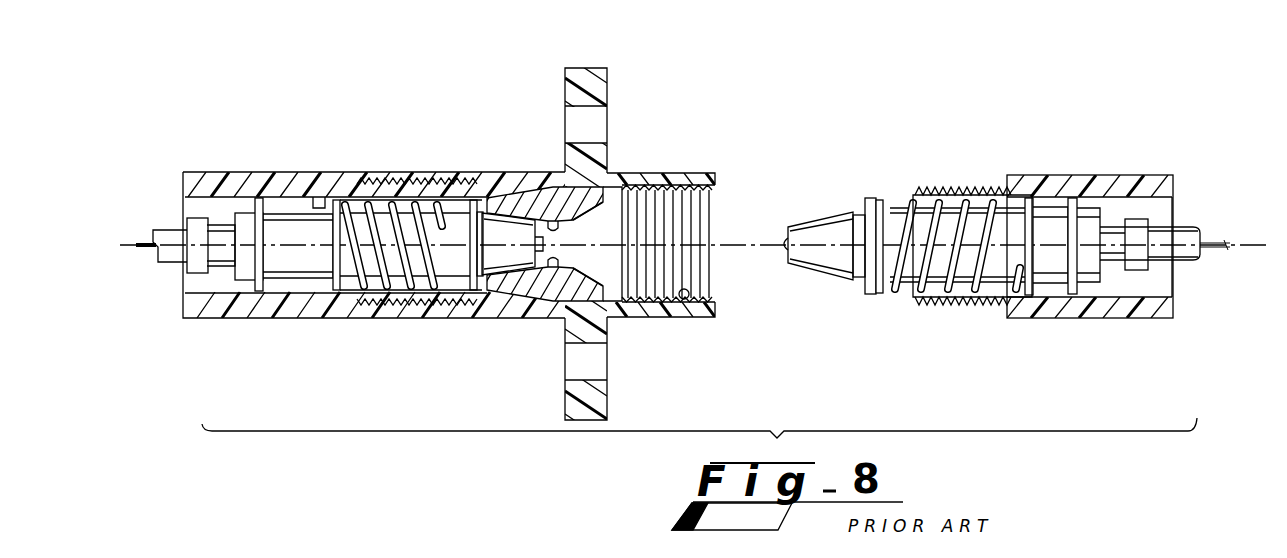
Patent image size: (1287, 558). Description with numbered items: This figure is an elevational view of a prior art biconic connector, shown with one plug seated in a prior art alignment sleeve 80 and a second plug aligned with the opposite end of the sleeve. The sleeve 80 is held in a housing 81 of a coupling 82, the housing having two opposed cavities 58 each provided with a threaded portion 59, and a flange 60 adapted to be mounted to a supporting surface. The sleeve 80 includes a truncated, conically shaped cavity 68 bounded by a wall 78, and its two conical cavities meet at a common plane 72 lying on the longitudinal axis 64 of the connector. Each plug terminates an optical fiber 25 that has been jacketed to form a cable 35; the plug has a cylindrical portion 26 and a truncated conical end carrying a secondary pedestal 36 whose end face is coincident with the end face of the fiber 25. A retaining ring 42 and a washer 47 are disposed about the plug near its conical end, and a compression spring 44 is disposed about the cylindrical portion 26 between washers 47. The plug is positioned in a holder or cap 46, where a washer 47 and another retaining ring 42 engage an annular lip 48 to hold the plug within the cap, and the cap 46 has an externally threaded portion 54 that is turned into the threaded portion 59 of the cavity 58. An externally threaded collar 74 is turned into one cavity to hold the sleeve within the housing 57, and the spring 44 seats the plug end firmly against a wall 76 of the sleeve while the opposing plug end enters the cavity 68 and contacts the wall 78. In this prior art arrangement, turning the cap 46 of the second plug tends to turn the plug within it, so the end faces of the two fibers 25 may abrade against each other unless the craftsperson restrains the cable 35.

The optical fiber 25 is at (140, 255).
The cylindrical portion 26 is at (345, 252).
The cable 35 is at (170, 229).
The secondary pedestal 36 is at (785, 232).
The retaining ring 42 is at (254, 284).
The compression spring 44 is at (907, 294).
The cap 46 is at (197, 172).
The washer 47 is at (343, 198).
The annular lip 48 is at (322, 197).
The externally threaded portion 54 is at (968, 186).
The housing 57 is at (398, 178).
The cavity 58 is at (702, 213).
The threaded portion 59 is at (686, 300).
The flange 60 is at (565, 82).
The longitudinal axis 64 is at (121, 224).
The conically shaped cavity 68 is at (603, 228).
The common plane 72 is at (553, 221).
The externally threaded collar 74 is at (456, 200).
The wall 76 is at (505, 214).
The wall 78 is at (580, 212).
The prior art sleeve 80 is at (528, 280).
The housing 81 is at (622, 308).
The coupling 82 is at (404, 317).